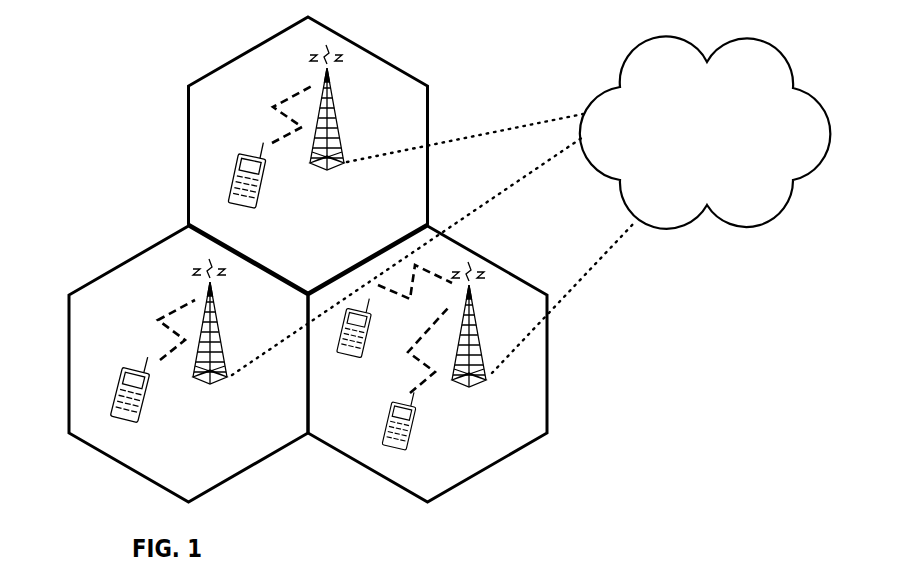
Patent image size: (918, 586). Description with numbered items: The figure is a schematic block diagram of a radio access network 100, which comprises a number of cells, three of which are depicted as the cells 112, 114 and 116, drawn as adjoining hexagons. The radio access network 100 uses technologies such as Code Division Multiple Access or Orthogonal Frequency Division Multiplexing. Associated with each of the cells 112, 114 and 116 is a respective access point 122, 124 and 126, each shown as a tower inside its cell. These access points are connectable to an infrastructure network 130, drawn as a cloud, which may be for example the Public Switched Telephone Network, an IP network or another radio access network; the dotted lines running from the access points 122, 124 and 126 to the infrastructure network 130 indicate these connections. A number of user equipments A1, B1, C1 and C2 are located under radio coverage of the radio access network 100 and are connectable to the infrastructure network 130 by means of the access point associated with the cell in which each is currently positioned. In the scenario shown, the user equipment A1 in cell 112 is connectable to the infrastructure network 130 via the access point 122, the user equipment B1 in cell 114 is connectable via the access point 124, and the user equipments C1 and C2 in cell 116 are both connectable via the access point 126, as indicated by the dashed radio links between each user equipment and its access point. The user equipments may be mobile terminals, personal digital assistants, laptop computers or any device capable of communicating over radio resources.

The radio access network 100 is at (66, 503).
The cell 112 is at (202, 133).
The cell 114 is at (222, 470).
The cell 116 is at (493, 452).
The access point 122 is at (327, 124).
The access point 124 is at (210, 338).
The access point 126 is at (470, 341).
The infrastructure network 130 is at (690, 144).
The user equipment A1 is at (252, 191).
The user equipment B1 is at (134, 405).
The user equipment C1 is at (361, 337).
The user equipment C2 is at (402, 432).